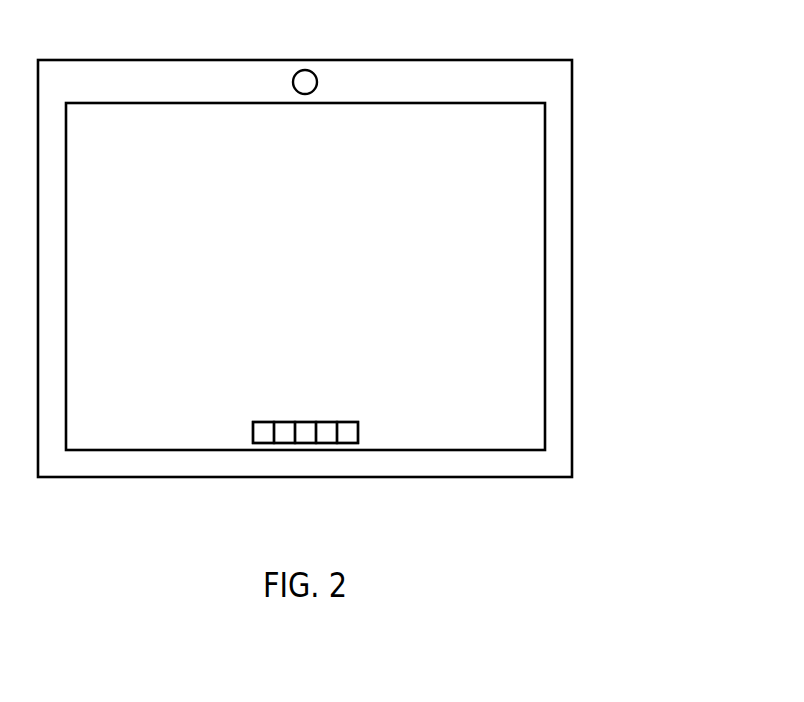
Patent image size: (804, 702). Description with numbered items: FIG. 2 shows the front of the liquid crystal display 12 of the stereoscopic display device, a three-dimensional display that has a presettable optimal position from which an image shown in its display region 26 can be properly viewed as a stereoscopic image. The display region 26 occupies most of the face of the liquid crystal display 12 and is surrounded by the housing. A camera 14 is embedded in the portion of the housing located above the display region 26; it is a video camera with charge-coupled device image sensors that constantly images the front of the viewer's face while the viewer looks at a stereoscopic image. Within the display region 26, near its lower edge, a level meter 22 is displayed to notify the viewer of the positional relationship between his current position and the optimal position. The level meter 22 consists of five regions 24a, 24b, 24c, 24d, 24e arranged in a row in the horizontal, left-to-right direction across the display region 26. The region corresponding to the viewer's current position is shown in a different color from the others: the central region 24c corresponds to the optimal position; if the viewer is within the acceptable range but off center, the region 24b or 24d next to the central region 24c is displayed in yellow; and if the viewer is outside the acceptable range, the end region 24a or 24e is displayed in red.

The liquid crystal display 12 is at (573, 59).
The camera 14 is at (303, 80).
The level meter 22 is at (358, 420).
The region 24a is at (263, 432).
The region 24b is at (283, 436).
The central region 24c is at (306, 432).
The region 24d is at (325, 436).
The region 24e is at (348, 432).
The display region 26 is at (528, 153).